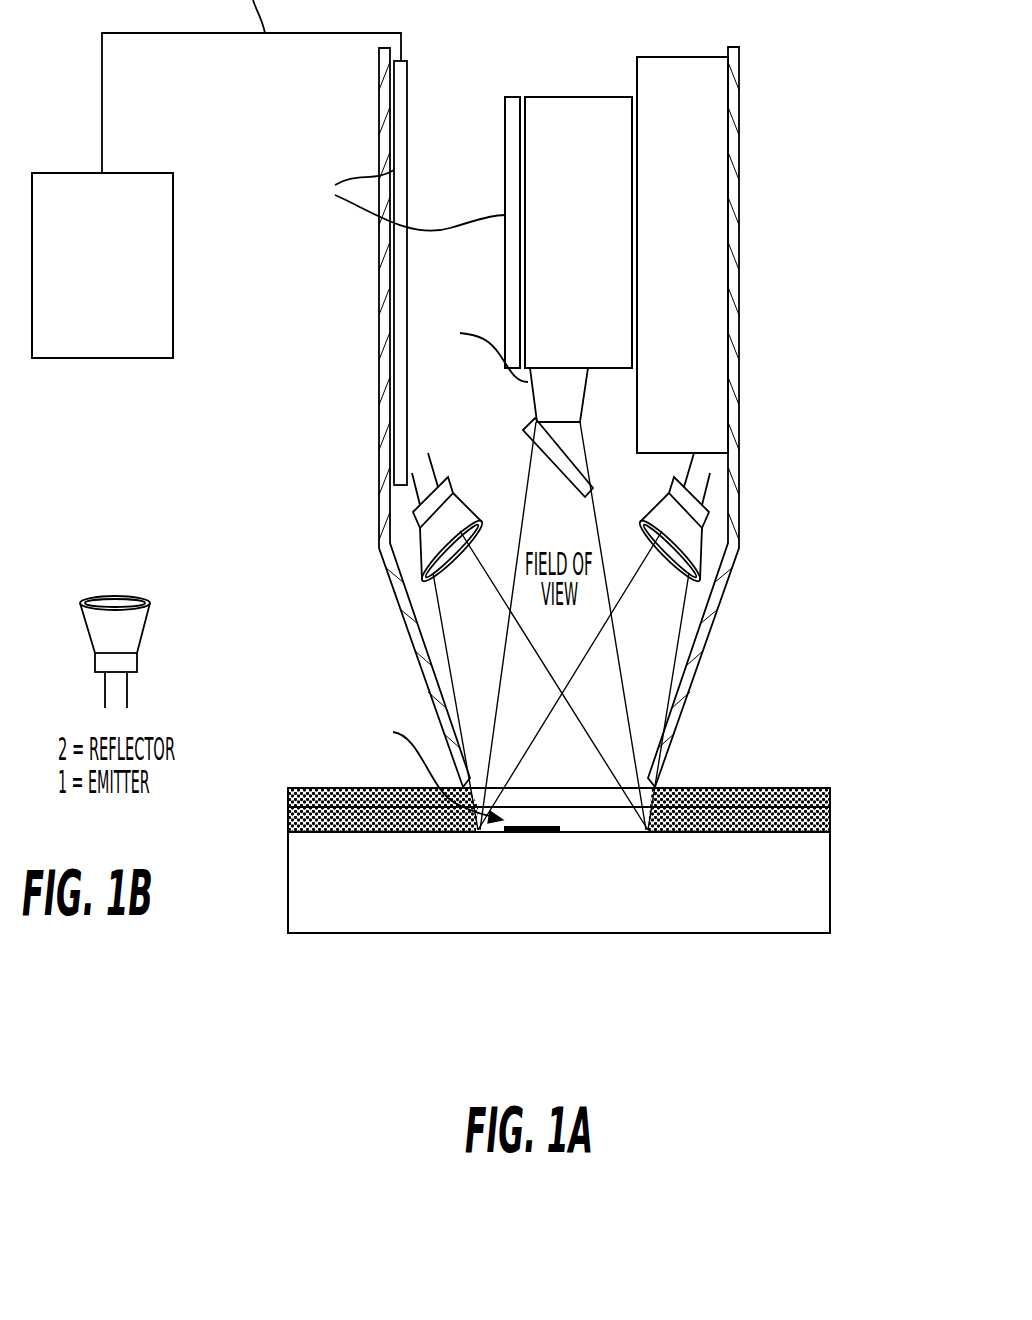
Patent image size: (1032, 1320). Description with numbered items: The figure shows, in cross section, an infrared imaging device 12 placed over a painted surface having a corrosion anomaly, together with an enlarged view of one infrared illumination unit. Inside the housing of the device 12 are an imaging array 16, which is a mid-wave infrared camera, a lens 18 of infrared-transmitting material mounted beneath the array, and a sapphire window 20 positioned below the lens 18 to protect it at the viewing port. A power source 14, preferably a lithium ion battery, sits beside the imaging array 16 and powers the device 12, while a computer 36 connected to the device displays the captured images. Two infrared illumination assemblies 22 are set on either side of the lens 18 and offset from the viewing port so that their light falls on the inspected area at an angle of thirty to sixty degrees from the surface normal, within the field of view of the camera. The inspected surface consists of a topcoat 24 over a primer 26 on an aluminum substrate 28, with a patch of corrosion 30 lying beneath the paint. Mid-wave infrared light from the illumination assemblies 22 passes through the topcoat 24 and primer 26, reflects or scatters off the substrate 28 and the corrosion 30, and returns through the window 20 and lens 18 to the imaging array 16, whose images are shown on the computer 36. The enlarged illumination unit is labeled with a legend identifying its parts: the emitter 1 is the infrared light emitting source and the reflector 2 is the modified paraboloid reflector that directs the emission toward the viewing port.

In FIG. 1A, the imaging device 12 is at (572, 393).
In FIG. 1A, the power source 14 is at (682, 255).
In FIG. 1A, the imaging array 16 is at (568, 232).
In FIG. 1A, the lens 18 is at (504, 367).
In FIG. 1A, the sapphire window 20 is at (535, 457).
In FIG. 1A, the infrared illumination assembly 22 is at (588, 641).
In FIG. 1A, the topcoat 24 is at (597, 743).
In FIG. 1A, the primer 26 is at (608, 801).
In FIG. 1A, the substrate 28 is at (559, 932).
In FIG. 1A, the corrosion 30 is at (431, 849).
In FIG. 1A, the computer 36 is at (216, 195).
In FIG. 1B, the emitter 1 is at (94, 679).
In FIG. 1B, the reflector 2 is at (100, 624).